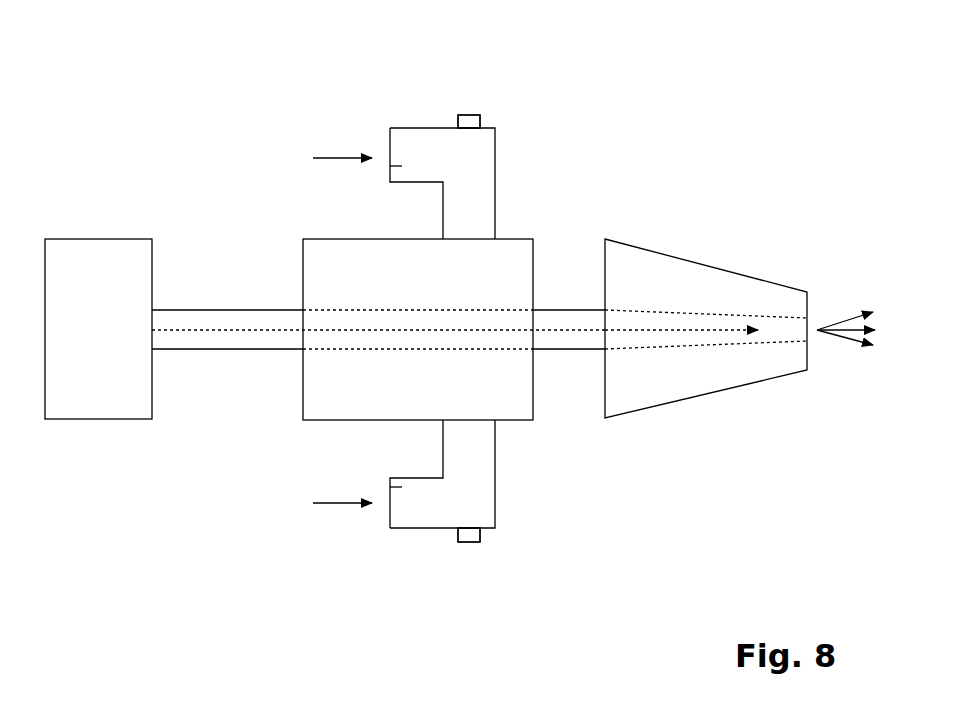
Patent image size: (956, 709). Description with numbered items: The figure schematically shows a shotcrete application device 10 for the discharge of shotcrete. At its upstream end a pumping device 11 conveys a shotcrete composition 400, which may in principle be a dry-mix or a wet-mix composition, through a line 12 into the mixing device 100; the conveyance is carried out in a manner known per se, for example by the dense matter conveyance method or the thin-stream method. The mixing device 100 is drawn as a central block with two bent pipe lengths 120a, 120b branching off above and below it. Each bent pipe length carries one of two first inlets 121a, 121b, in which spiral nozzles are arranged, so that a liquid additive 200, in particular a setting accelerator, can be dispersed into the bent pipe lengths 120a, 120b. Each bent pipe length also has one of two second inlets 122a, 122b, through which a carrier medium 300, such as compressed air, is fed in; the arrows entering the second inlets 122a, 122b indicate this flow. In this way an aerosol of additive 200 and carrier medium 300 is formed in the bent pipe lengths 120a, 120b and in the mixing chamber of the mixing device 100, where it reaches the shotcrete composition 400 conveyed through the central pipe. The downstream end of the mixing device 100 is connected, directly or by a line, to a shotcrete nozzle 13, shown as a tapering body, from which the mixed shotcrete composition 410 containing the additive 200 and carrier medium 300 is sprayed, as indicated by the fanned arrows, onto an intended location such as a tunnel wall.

The shotcrete application device 10 is at (175, 518).
The pumping device 11 is at (97, 262).
The line 12 is at (222, 318).
The shotcrete nozzle 13 is at (670, 272).
The mixing device 100 is at (548, 465).
The bent pipe length 120a is at (402, 545).
The bent pipe length 120b is at (407, 108).
The first inlet 121a is at (478, 543).
The first inlet 121b is at (478, 115).
The second inlet 122a is at (390, 487).
The second inlet 122b is at (390, 166).
The liquid additive 200 is at (469, 112).
The carrier medium 300 is at (333, 157).
The shotcrete composition 400 is at (176, 332).
The mixed shotcrete composition 410 is at (855, 333).